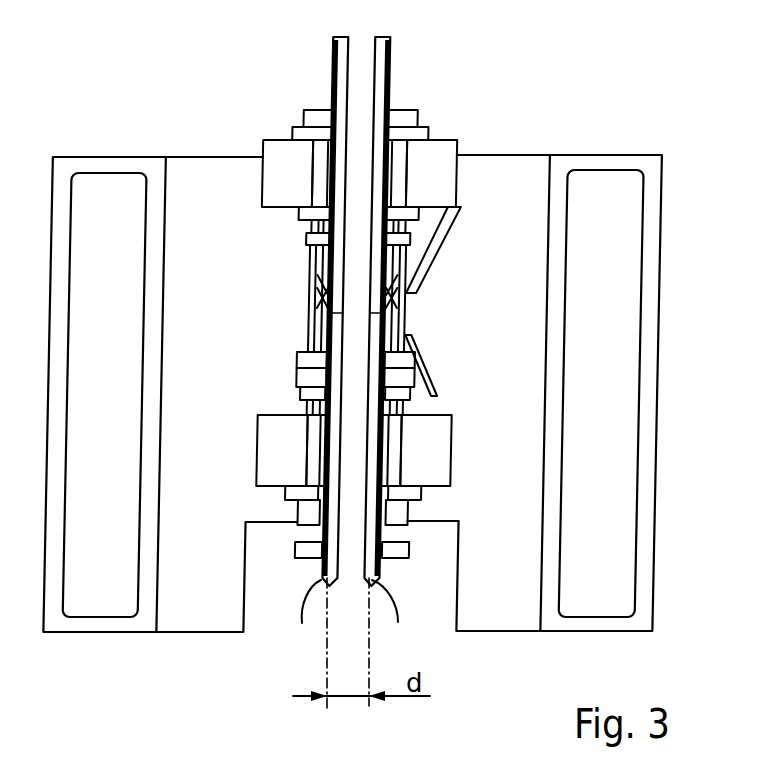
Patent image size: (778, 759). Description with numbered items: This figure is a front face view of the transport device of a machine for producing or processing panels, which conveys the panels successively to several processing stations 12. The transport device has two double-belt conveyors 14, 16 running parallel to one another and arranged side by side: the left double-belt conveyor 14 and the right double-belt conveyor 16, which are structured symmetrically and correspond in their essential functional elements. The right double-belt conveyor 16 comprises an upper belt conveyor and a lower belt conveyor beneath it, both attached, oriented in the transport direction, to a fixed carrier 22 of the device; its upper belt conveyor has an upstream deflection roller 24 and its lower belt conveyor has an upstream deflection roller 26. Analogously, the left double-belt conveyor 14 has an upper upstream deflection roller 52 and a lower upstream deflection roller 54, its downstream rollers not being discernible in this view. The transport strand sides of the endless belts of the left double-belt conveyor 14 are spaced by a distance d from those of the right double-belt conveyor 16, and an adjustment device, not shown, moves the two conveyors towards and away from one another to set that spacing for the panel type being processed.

The processing station 12 is at (437, 283).
The left double-belt conveyor 14 is at (221, 94).
The right double-belt conveyor 16 is at (500, 101).
The fixed carrier 22 is at (633, 323).
The upstream deflection roller of upper belt conveyor 24 is at (385, 57).
The upstream deflection roller of lower belt conveyor 26 is at (394, 642).
The upper upstream deflection roller 52 is at (336, 66).
The lower upstream deflection roller 54 is at (303, 643).